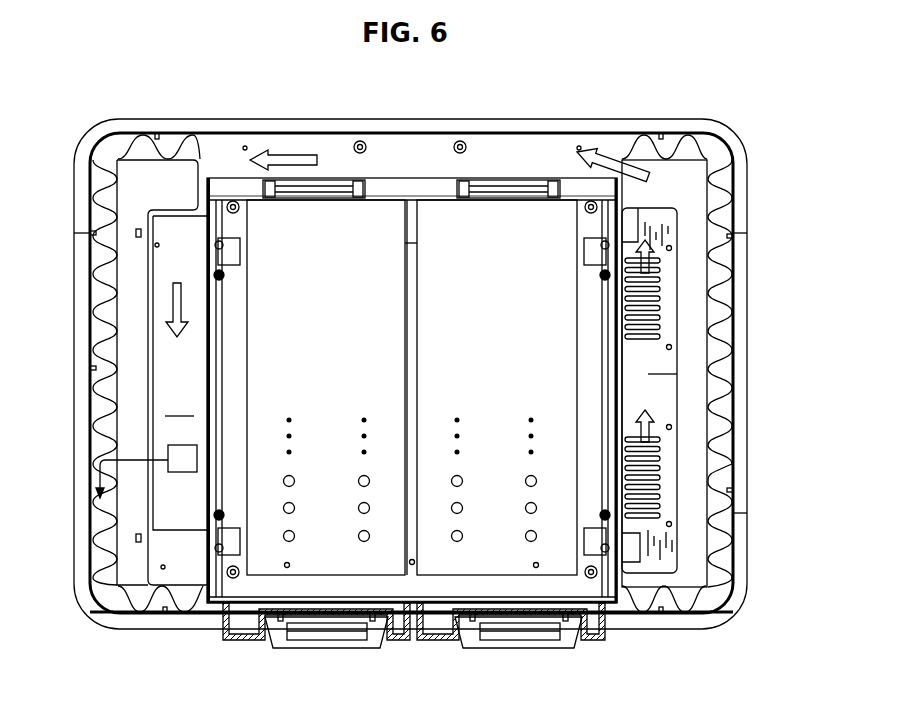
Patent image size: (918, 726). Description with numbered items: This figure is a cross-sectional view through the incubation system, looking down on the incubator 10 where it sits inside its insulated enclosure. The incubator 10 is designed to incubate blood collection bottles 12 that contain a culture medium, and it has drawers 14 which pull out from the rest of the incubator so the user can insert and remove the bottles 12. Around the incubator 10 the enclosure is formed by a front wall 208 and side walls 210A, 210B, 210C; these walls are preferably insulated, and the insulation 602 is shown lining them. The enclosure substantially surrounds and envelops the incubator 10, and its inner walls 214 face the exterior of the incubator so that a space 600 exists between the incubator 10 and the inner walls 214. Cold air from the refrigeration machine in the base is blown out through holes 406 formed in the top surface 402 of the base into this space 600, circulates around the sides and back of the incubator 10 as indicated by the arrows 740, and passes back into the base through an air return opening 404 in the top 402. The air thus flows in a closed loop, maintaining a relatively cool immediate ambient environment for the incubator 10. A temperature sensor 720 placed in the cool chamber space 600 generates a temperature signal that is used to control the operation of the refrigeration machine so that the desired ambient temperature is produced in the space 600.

The incubator 10 is at (356, 360).
The blood collection bottles 12 is at (295, 504).
The drawers 14 is at (365, 648).
The front wall 208 is at (193, 628).
The side wall 210A is at (745, 337).
The side wall 210B is at (408, 118).
The side wall 210C is at (77, 328).
The inner walls 214 is at (148, 257).
The top surface of the base 402 is at (677, 394).
The air return opening 404 is at (175, 356).
The holes 406 is at (662, 305).
The space 600 is at (421, 387).
The insulation 602 is at (93, 420).
The temperature sensor 720 is at (177, 473).
The arrows 740 is at (283, 140).